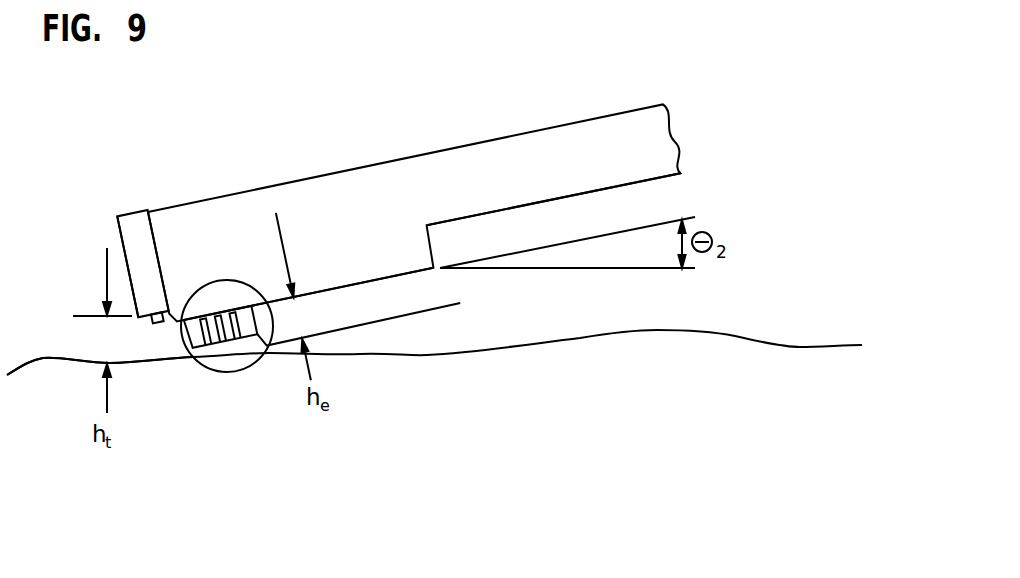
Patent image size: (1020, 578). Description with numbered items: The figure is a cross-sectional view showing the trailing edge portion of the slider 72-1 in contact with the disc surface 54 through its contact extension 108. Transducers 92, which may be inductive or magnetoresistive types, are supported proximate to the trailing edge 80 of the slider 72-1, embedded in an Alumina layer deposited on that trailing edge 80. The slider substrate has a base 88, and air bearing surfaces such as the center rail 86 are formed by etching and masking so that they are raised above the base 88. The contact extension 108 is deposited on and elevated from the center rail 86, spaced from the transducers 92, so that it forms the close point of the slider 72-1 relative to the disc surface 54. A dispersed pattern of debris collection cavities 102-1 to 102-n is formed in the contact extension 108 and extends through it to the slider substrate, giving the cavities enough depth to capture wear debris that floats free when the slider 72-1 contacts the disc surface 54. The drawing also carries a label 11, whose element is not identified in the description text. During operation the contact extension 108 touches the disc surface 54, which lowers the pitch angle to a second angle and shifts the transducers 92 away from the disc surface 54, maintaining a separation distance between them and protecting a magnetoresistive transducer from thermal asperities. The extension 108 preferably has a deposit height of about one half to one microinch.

The slider 72-1 is at (347, 154).
The transducers 92 is at (133, 213).
The trailing edge 80 is at (118, 235).
The base 88 is at (570, 196).
The center rail 86 is at (366, 282).
The contact extension 108 is at (270, 318).
The debris collection cavity 102-1 is at (228, 413).
The debris collection cavity 102-n is at (190, 352).
The disc surface 54 is at (735, 320).
The medium surface 11 is at (197, 358).